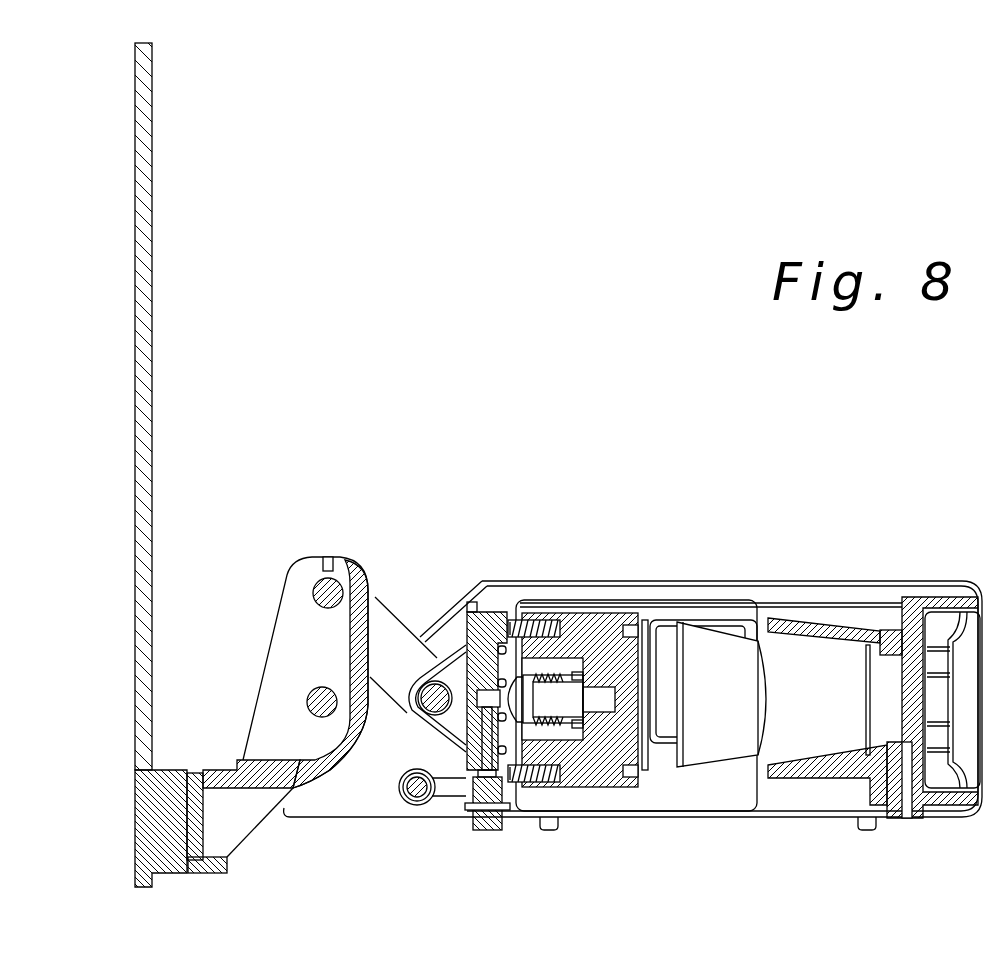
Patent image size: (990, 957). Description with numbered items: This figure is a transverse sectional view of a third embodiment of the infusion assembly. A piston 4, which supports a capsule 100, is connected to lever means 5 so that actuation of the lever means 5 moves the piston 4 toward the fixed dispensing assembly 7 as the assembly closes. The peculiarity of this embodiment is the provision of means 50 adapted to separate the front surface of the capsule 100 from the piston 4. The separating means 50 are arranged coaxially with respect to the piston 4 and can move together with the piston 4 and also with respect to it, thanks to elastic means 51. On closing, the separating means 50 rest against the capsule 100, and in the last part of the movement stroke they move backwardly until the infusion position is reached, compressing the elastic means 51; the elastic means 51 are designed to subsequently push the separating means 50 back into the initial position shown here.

The lever means 5 is at (134, 398).
The means for separating the front surface of the capsule 50 is at (578, 617).
The elastic means 51 is at (530, 605).
The piston 4 is at (607, 753).
The capsule 100 is at (714, 645).
The dispensing assembly 7 is at (893, 633).